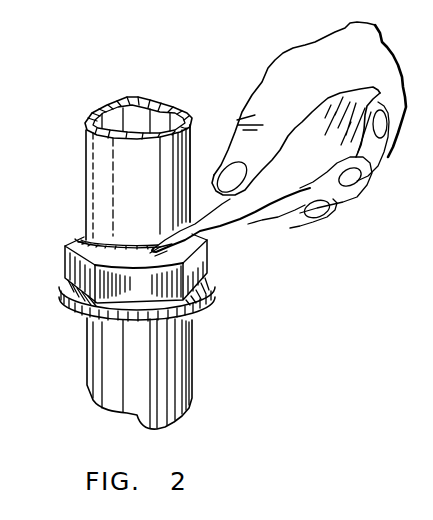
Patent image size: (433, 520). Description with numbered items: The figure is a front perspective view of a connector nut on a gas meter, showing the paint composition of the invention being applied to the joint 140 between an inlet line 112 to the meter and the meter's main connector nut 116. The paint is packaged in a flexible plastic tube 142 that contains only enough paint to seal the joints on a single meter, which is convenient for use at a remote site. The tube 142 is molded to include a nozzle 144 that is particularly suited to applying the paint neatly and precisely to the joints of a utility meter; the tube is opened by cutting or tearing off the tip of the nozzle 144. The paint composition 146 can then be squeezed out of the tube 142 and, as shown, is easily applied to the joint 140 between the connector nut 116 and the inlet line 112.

The inlet line 112 is at (182, 134).
The main connector nut 116 is at (214, 288).
The joint 140 is at (82, 240).
The tube 142 is at (238, 210).
The nozzle 144 is at (168, 238).
The paint composition 146 is at (143, 250).